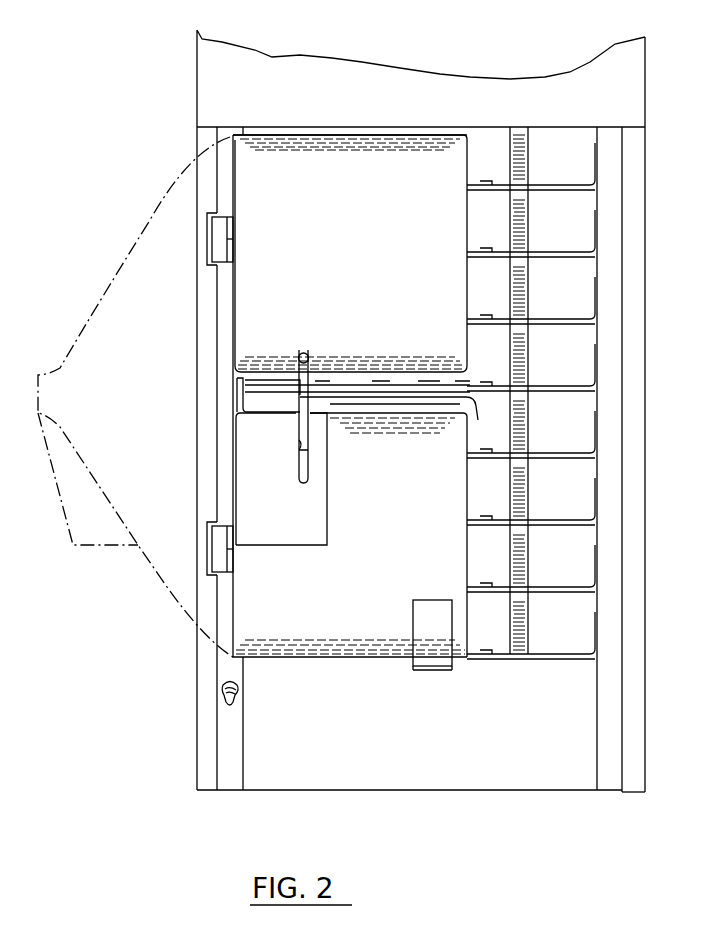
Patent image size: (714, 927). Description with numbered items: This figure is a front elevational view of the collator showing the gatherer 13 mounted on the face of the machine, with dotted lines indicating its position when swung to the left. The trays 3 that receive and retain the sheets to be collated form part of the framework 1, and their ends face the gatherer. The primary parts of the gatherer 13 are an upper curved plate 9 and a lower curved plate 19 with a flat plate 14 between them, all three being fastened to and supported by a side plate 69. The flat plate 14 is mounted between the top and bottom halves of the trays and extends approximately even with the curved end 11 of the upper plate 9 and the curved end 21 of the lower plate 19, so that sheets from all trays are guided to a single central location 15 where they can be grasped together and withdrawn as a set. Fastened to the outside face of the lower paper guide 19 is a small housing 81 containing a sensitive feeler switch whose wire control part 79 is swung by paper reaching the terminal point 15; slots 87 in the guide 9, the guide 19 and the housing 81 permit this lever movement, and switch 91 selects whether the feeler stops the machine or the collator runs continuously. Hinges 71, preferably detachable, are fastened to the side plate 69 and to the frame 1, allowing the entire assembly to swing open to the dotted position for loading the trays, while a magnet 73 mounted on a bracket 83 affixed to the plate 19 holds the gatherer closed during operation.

The framework 1 is at (230, 790).
The trays 3 is at (546, 184).
The curved plate 9 is at (425, 160).
The curved end 11 is at (430, 383).
The gatherer 13 is at (306, 165).
The flat plate 14 is at (365, 388).
The single central location 15 is at (478, 408).
The curved plate 19 is at (424, 545).
The curved end 21 is at (410, 406).
The side plate 69 is at (233, 615).
The hinges 71 is at (215, 238).
The magnet 73 is at (440, 670).
The wire control part 79 is at (237, 380).
The housing 81 is at (327, 520).
The bracket 83 is at (413, 622).
The slots 87 is at (299, 356).
The switch 91 is at (238, 697).